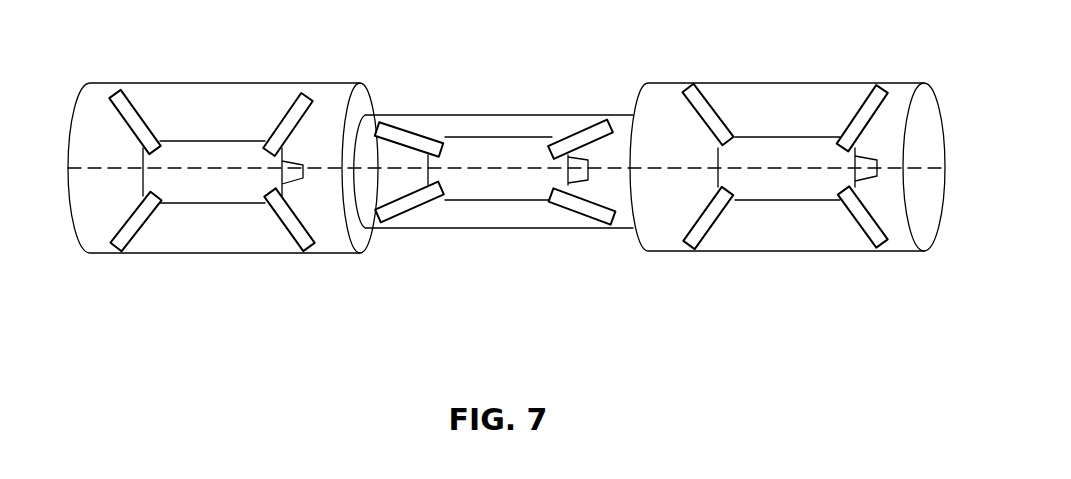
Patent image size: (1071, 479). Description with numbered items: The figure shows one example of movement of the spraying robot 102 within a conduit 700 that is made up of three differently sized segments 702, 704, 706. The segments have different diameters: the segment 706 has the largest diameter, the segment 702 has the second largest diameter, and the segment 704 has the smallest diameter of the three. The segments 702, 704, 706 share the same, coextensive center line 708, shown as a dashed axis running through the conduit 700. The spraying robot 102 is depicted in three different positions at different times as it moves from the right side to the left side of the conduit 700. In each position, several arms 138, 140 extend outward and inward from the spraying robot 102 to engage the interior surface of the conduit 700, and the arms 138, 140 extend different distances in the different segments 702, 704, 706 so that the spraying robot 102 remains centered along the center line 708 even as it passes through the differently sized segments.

The spraying robot 102 is at (188, 109).
The arm 138 is at (415, 143).
The arm 140 is at (873, 98).
The conduit 700 is at (529, 185).
The segment 702 is at (810, 189).
The segment 704 is at (494, 203).
The segment 706 is at (223, 185).
The center line 708 is at (918, 162).